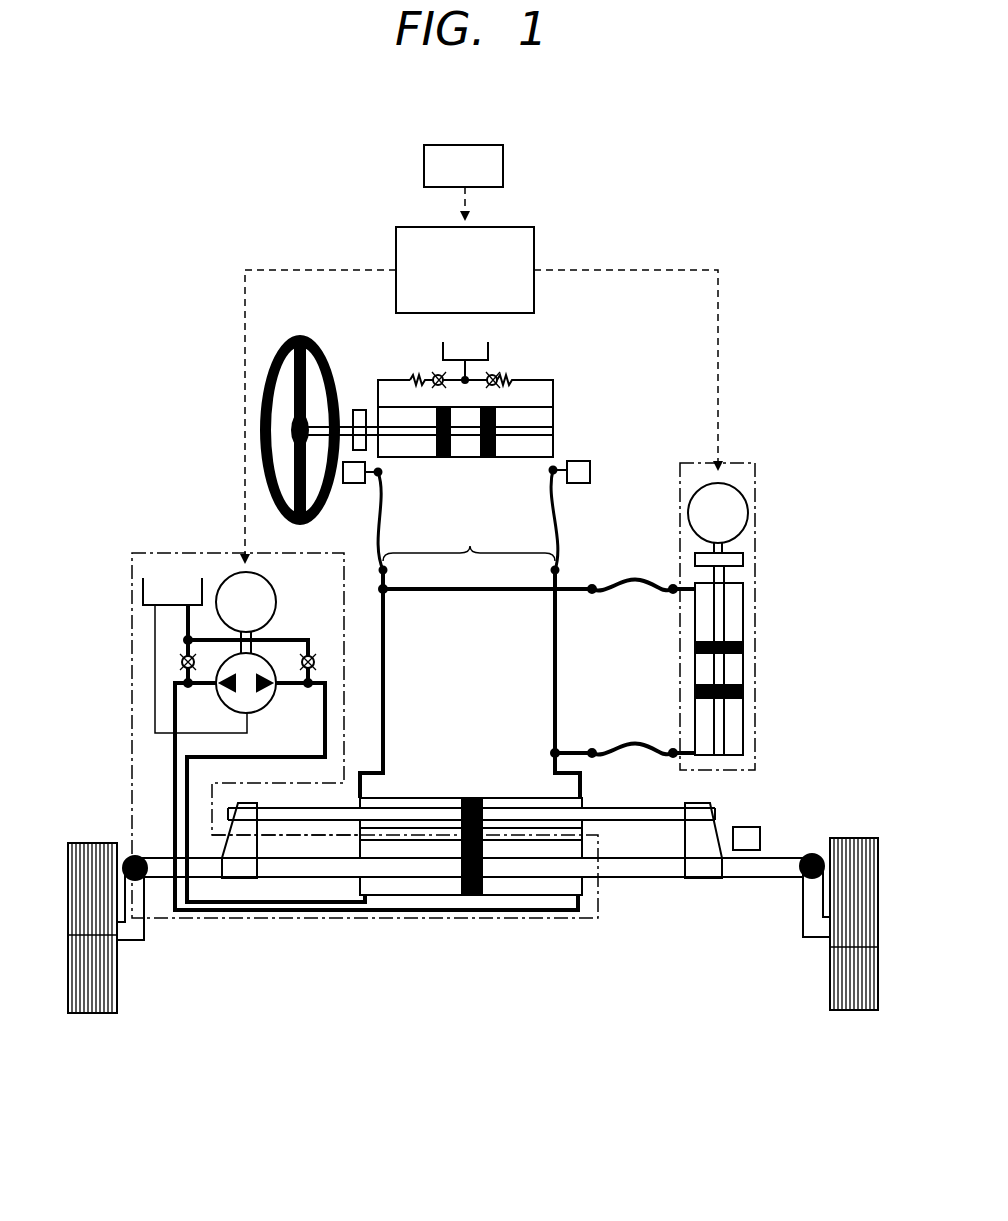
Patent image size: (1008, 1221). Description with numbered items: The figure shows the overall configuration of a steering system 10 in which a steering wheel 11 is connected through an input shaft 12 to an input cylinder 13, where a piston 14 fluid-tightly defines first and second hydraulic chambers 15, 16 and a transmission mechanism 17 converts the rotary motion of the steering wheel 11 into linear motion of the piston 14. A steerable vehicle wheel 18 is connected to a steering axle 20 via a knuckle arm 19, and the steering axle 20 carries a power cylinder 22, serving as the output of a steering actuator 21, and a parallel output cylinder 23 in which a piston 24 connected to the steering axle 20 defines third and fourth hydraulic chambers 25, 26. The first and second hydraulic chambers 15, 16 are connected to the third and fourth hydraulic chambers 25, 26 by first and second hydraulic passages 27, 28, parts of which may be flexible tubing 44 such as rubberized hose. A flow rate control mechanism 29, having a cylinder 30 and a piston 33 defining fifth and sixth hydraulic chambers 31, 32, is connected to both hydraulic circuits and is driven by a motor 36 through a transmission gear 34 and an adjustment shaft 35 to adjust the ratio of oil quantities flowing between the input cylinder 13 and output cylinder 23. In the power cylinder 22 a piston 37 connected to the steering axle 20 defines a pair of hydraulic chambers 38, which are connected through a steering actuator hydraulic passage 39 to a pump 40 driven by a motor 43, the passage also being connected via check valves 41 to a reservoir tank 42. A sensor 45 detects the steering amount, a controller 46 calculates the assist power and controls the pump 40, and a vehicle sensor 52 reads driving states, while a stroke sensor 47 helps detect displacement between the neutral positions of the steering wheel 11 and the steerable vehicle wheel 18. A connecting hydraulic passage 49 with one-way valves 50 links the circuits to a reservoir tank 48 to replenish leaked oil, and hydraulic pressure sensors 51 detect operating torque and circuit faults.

The steering system 10 is at (285, 226).
The steering wheel 11 is at (310, 336).
The input shaft 12 is at (316, 430).
The input cylinder 13 is at (400, 403).
The piston 14 is at (487, 458).
The first hydraulic chamber 15 is at (405, 450).
The second hydraulic chamber 16 is at (540, 412).
The transmission mechanism 17 is at (472, 432).
The steerable vehicle wheel 18 is at (105, 968).
The knuckle arm 19 is at (135, 905).
The steering axle 20 is at (655, 880).
The steering actuator 21 is at (347, 920).
The power cylinder 22 is at (552, 897).
The output cylinder 23 is at (425, 800).
The piston 24 is at (470, 798).
The third hydraulic chamber 25 is at (375, 800).
The fourth hydraulic chamber 26 is at (515, 800).
The first hydraulic passage 27 is at (383, 680).
The second hydraulic passage 28 is at (555, 680).
The flow rate control mechanism 29 is at (698, 655).
The cylinder 30 is at (695, 612).
The fifth hydraulic chamber 31 is at (738, 620).
The sixth hydraulic chamber 32 is at (738, 727).
The piston 33 is at (743, 692).
The transmission gear 34 is at (710, 672).
The adjustment shaft 35 is at (720, 573).
The motor 36 is at (735, 505).
The piston 37 is at (480, 863).
The hydraulic chambers 38 is at (498, 888).
The steering actuator hydraulic passage 39 is at (257, 912).
The pump 40 is at (268, 700).
The check valves 41 is at (312, 654).
The reservoir tank 42 is at (143, 590).
The motor 43 is at (275, 596).
The flexible tubing 44 is at (468, 522).
The sensor 45 is at (358, 412).
The controller 46 is at (516, 227).
The stroke sensor 47 is at (760, 835).
The reservoir tank 48 is at (470, 350).
The connecting hydraulic passage 49 is at (553, 385).
The one-way valves 50 is at (434, 377).
The hydraulic pressure sensors 51 is at (588, 462).
The vehicle sensor 52 is at (503, 165).